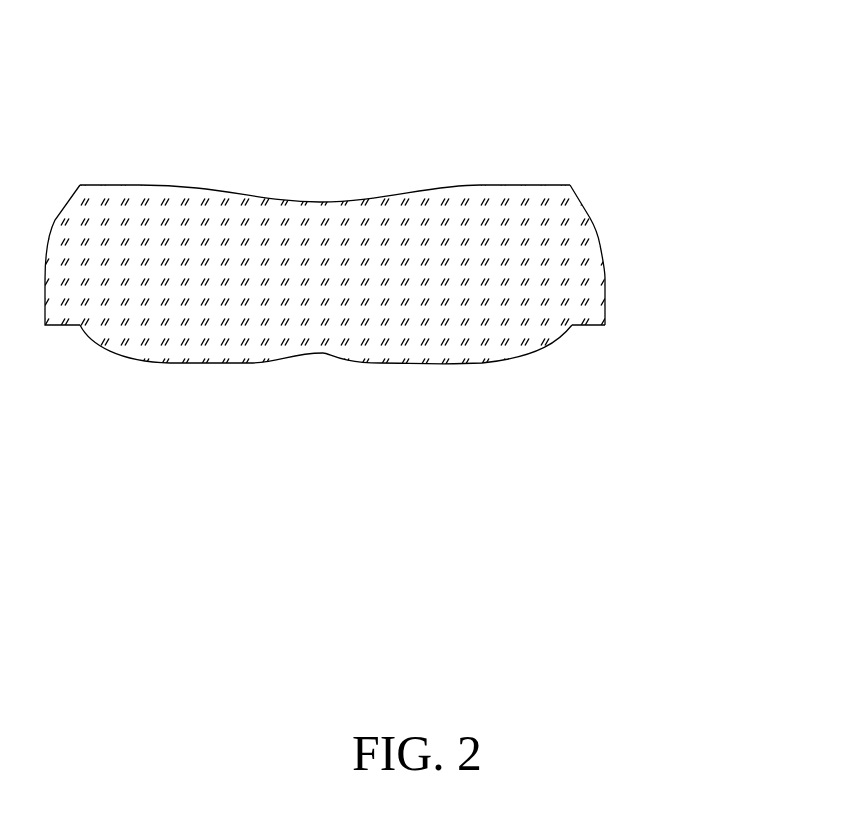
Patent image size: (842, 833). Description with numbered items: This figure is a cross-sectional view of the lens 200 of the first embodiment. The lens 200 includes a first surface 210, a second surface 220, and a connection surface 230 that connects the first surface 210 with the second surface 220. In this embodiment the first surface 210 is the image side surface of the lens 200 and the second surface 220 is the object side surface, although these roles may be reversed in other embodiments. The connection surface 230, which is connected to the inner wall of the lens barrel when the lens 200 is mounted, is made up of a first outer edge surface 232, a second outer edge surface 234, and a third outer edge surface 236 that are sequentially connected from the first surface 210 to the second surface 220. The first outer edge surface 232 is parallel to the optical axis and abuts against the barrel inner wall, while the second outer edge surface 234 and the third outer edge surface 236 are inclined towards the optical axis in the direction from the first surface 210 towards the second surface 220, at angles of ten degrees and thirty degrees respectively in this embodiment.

The lens 200 is at (401, 220).
The first surface 210 is at (482, 363).
The second surface 220 is at (477, 185).
The connection surface 230 is at (401, 270).
The first outer edge surface 232 is at (605, 298).
The second outer edge surface 234 is at (597, 250).
The third outer edge surface 236 is at (573, 200).